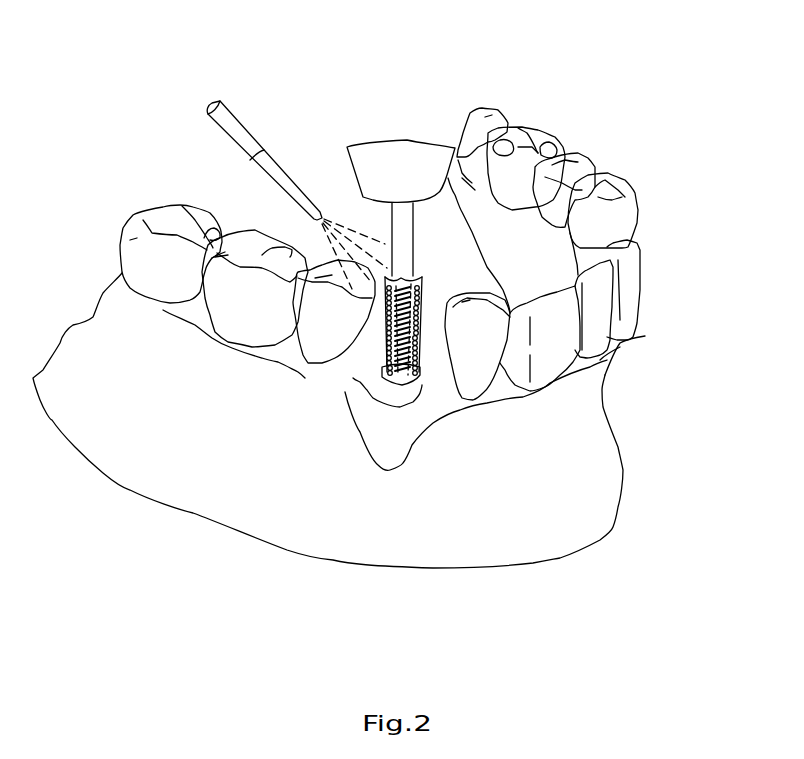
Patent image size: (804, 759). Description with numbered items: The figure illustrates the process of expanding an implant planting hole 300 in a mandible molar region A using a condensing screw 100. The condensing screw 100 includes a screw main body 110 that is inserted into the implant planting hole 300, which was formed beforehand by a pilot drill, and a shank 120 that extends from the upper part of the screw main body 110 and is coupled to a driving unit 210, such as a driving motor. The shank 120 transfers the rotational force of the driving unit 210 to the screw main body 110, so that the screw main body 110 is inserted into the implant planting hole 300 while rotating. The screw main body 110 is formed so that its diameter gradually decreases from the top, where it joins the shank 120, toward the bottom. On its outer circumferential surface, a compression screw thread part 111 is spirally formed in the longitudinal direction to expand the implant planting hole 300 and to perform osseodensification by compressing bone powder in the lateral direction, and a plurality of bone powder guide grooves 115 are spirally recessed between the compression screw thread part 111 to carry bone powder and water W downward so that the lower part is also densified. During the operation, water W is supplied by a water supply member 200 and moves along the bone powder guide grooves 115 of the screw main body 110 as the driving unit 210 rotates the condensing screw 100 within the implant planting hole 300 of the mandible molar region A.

The condensing screw 100 is at (596, 98).
The screw main body 110 is at (564, 291).
The compression screw thread part 111 is at (422, 358).
The bone powder guide groove 115 is at (423, 310).
The shank 120 is at (407, 233).
The water supply member 200 is at (235, 135).
The driving unit 210 is at (398, 160).
The implant planting hole 300 is at (408, 387).
The water W is at (350, 218).
The mandible molar region A is at (195, 472).